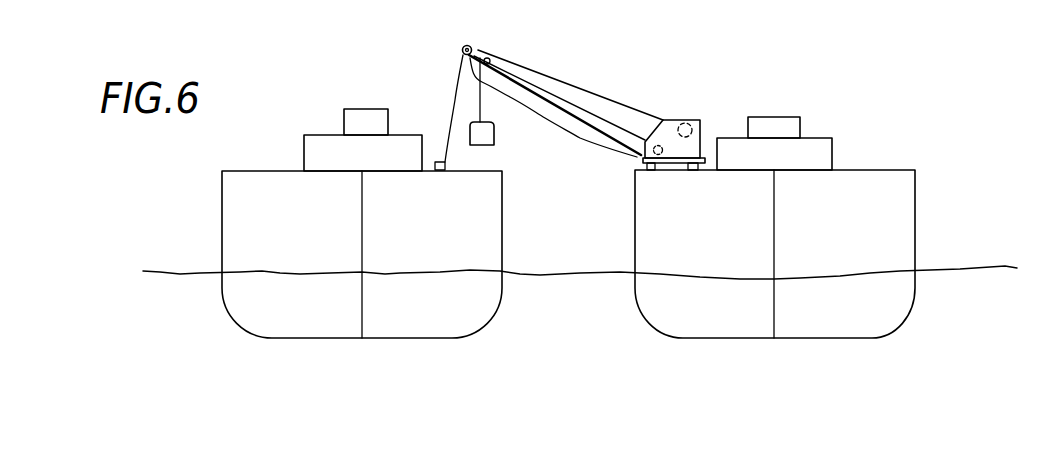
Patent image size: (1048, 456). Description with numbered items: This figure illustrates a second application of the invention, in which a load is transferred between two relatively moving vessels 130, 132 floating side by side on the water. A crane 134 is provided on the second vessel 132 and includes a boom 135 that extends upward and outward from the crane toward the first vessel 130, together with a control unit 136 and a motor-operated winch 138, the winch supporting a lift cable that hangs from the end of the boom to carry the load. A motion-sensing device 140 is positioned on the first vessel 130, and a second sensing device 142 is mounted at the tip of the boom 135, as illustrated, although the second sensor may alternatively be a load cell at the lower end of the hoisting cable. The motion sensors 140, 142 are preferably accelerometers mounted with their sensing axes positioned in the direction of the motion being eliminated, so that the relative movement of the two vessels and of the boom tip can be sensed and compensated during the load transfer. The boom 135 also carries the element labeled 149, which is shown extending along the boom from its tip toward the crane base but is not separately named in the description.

The vessel 130 is at (243, 182).
The vessel 132 is at (882, 178).
The crane 134 is at (692, 118).
The boom 135 is at (573, 110).
The control unit 136 is at (661, 158).
The motor-operated winch 138 is at (700, 125).
The motion-sensing device 140 is at (435, 162).
The second sensing device 142 is at (473, 46).
The boom 149 is at (545, 72).